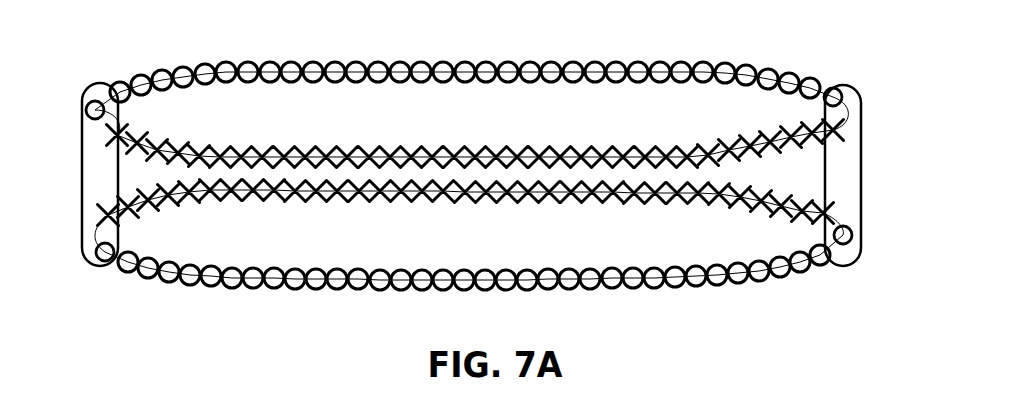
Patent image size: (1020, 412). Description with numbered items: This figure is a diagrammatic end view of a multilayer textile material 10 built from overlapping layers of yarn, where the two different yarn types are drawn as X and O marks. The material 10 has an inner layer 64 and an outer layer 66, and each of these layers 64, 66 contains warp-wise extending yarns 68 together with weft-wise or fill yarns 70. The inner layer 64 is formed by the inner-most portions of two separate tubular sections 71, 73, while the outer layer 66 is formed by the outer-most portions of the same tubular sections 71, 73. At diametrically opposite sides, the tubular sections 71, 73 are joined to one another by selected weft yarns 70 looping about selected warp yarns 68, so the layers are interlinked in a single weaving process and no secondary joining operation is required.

The textile material 10 is at (868, 133).
The inner layer 64 is at (547, 160).
The outer layer 66 is at (463, 62).
The warp-wise extending yarns 68 is at (315, 152).
The weft yarns 70 is at (82, 157).
The tubular section 71 is at (744, 74).
The tubular section 73 is at (828, 265).